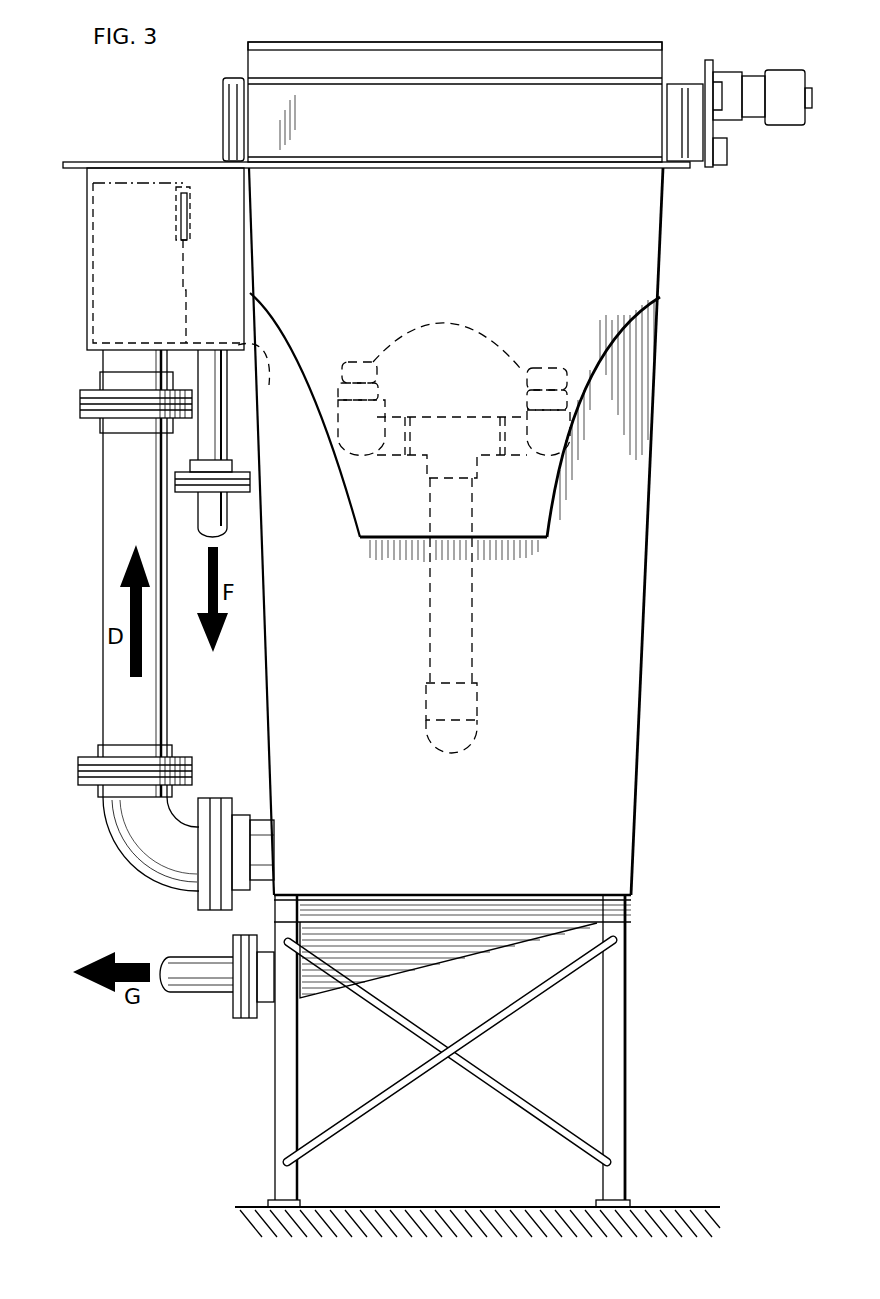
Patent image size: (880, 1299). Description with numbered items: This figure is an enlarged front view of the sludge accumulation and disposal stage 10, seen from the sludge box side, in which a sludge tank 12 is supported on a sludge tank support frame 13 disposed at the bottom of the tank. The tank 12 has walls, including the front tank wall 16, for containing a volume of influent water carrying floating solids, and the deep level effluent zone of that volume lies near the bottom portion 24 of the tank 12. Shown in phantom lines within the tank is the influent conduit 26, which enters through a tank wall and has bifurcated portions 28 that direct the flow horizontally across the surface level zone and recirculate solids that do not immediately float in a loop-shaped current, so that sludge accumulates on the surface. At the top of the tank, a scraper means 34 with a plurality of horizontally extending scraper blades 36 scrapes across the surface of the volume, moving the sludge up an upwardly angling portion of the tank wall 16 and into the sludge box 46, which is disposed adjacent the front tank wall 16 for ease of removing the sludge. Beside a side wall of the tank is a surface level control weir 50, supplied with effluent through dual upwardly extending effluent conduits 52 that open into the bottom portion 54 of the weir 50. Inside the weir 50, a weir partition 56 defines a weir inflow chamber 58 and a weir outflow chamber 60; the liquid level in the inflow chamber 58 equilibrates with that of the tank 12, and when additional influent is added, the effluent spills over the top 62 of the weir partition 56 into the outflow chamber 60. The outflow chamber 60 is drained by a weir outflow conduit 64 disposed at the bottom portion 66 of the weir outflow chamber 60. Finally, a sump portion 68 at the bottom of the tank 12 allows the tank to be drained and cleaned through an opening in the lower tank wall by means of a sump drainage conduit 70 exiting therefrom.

The sludge accumulation and disposal stage 10 is at (697, 371).
The sludge tank 12 is at (650, 490).
The sludge tank support frame 13 is at (615, 1080).
The tank wall 16 is at (528, 755).
The bottom portion 24 is at (272, 786).
The influent conduit 26 is at (472, 640).
The bifurcated portions 28 is at (454, 394).
The scraper means 34 is at (538, 42).
The scraper blades 36 is at (356, 123).
The sludge box 46 is at (474, 245).
The surface level control weir 50 is at (87, 298).
The effluent conduits 52 is at (103, 522).
The bottom portion of weir 54 is at (214, 322).
The weir partition 56 is at (180, 288).
The weir inflow chamber 58 is at (141, 260).
The weir outflow chamber 60 is at (224, 280).
The top of weir partition 62 is at (176, 205).
The weir outflow conduit 64 is at (228, 431).
The bottom portion of weir outflow chamber 66 is at (272, 377).
The sump portion 68 is at (377, 960).
The sump drainage conduit 70 is at (206, 982).